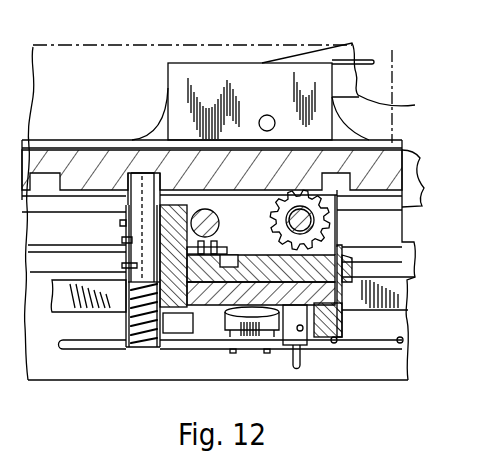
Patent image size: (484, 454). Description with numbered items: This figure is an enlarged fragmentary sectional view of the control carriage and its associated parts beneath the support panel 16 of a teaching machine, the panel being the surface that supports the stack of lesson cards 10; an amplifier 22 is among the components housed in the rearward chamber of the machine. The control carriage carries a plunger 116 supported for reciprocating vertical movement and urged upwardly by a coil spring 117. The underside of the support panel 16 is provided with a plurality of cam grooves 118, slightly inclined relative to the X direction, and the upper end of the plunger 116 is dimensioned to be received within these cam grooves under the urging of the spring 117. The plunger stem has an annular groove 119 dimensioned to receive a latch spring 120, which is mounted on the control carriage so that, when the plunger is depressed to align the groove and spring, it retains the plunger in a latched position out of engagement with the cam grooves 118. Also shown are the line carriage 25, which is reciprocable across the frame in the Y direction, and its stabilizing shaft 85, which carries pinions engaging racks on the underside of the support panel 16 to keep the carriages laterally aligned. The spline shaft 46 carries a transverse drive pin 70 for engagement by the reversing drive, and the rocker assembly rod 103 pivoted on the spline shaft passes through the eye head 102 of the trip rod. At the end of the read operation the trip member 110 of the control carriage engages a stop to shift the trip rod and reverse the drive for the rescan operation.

The lesson cards 10 is at (104, 66).
The support panel 16 is at (126, 145).
The amplifier 22 is at (399, 158).
The cam grooves 118 is at (337, 160).
The plunger 116 is at (138, 222).
The annular groove 119 is at (136, 241).
The latch spring 120 is at (124, 266).
The stabilizing shaft 85 is at (285, 219).
The drive pin 70 is at (312, 257).
The spline shaft 46 is at (400, 290).
The coil spring 117 is at (143, 310).
The line carriage 25 is at (208, 300).
The trip member 110 is at (343, 322).
The eye head 102 is at (302, 364).
The rod 103 is at (380, 344).